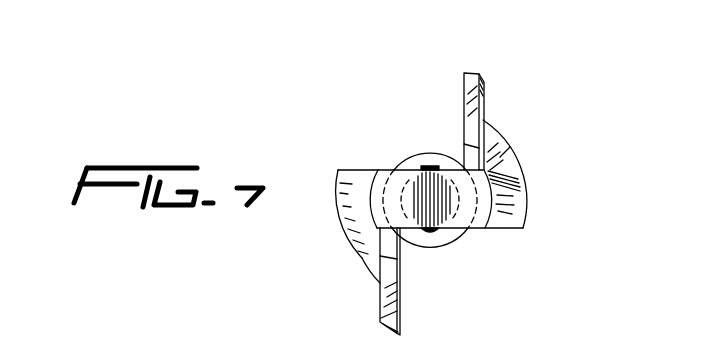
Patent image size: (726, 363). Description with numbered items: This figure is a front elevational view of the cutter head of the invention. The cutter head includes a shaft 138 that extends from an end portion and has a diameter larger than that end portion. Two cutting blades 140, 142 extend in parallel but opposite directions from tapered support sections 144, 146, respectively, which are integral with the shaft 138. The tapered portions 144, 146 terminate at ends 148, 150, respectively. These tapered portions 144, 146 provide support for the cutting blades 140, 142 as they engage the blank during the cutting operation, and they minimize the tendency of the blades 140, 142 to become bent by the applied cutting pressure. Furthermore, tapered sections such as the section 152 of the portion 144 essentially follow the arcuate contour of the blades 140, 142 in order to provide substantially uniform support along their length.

The shaft 138 is at (420, 150).
The cutting blade 140 is at (485, 97).
The cutting blade 142 is at (404, 314).
The tapered support section 144 is at (528, 188).
The tapered support section 146 is at (353, 257).
The end 148 is at (491, 229).
The end 150 is at (357, 167).
The tapered section 152 is at (510, 157).